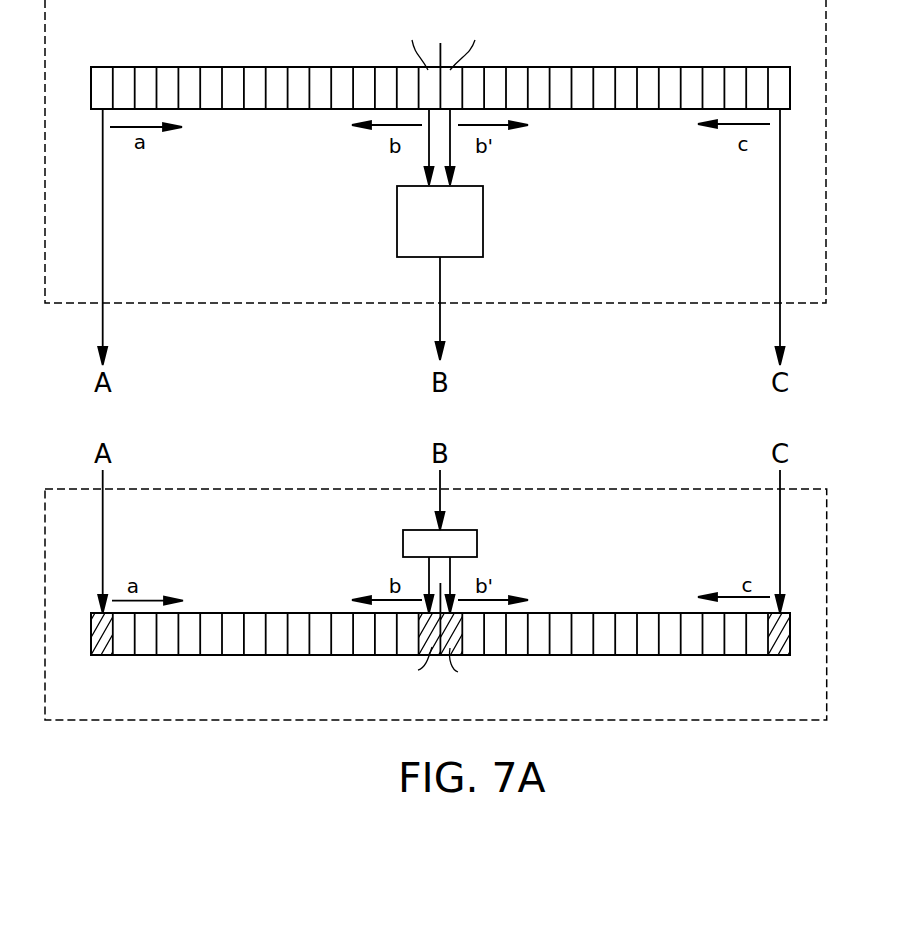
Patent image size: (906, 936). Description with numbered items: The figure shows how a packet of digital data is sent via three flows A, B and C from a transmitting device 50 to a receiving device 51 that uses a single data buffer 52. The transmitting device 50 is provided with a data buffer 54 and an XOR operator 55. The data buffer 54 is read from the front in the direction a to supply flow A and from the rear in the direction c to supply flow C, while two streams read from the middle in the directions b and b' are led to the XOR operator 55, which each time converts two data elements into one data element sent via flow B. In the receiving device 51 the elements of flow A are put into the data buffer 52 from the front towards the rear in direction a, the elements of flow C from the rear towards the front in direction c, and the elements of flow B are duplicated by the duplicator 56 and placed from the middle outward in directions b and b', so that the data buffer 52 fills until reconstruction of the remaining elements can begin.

The transmitting device 50 is at (45, 258).
The data buffer 54 is at (91, 92).
The XOR operator 55 is at (484, 222).
The receiving device 51 is at (45, 558).
The data buffer 52 is at (91, 638).
The duplicator 56 is at (477, 547).